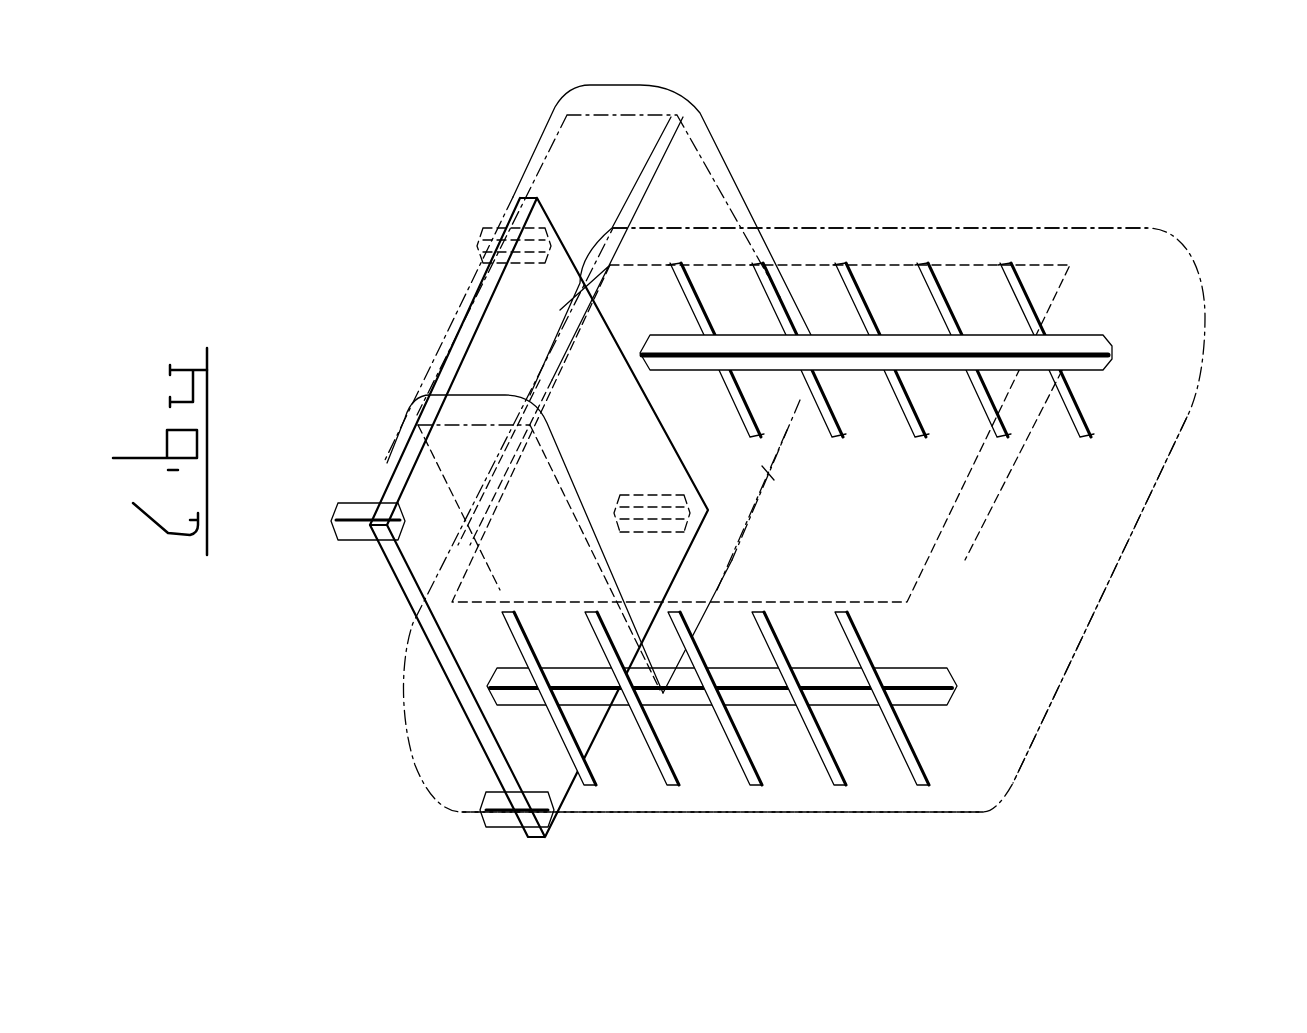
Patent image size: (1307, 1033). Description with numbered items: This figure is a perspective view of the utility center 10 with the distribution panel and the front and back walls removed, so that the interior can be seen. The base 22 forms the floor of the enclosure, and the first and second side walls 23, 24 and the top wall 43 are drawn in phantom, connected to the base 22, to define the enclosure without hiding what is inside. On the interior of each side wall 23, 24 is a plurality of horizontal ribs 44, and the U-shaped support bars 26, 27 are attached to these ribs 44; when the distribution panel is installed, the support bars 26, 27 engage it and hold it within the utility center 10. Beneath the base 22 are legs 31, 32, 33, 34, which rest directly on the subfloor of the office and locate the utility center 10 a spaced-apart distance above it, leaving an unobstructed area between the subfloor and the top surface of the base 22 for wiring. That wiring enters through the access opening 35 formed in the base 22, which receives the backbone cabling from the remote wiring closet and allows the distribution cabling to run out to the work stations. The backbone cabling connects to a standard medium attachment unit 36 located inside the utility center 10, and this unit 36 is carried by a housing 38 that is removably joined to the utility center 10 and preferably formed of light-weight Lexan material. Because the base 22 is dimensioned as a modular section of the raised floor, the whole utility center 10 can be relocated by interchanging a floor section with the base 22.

The utility center 10 is at (1202, 248).
The base 22 is at (404, 590).
The first side wall 23 is at (868, 227).
The second side wall 24 is at (763, 812).
The U-shaped support bar 26 is at (1113, 353).
The U-shaped support bar 27 is at (957, 690).
The leg 31 is at (485, 228).
The leg 32 is at (350, 512).
The leg 33 is at (505, 825).
The leg 34 is at (670, 533).
The access opening 35 is at (534, 537).
The medium attachment unit 36 is at (760, 470).
The housing 38 is at (613, 86).
The top wall 43 is at (1072, 560).
The horizontal ribs 44 is at (840, 262).